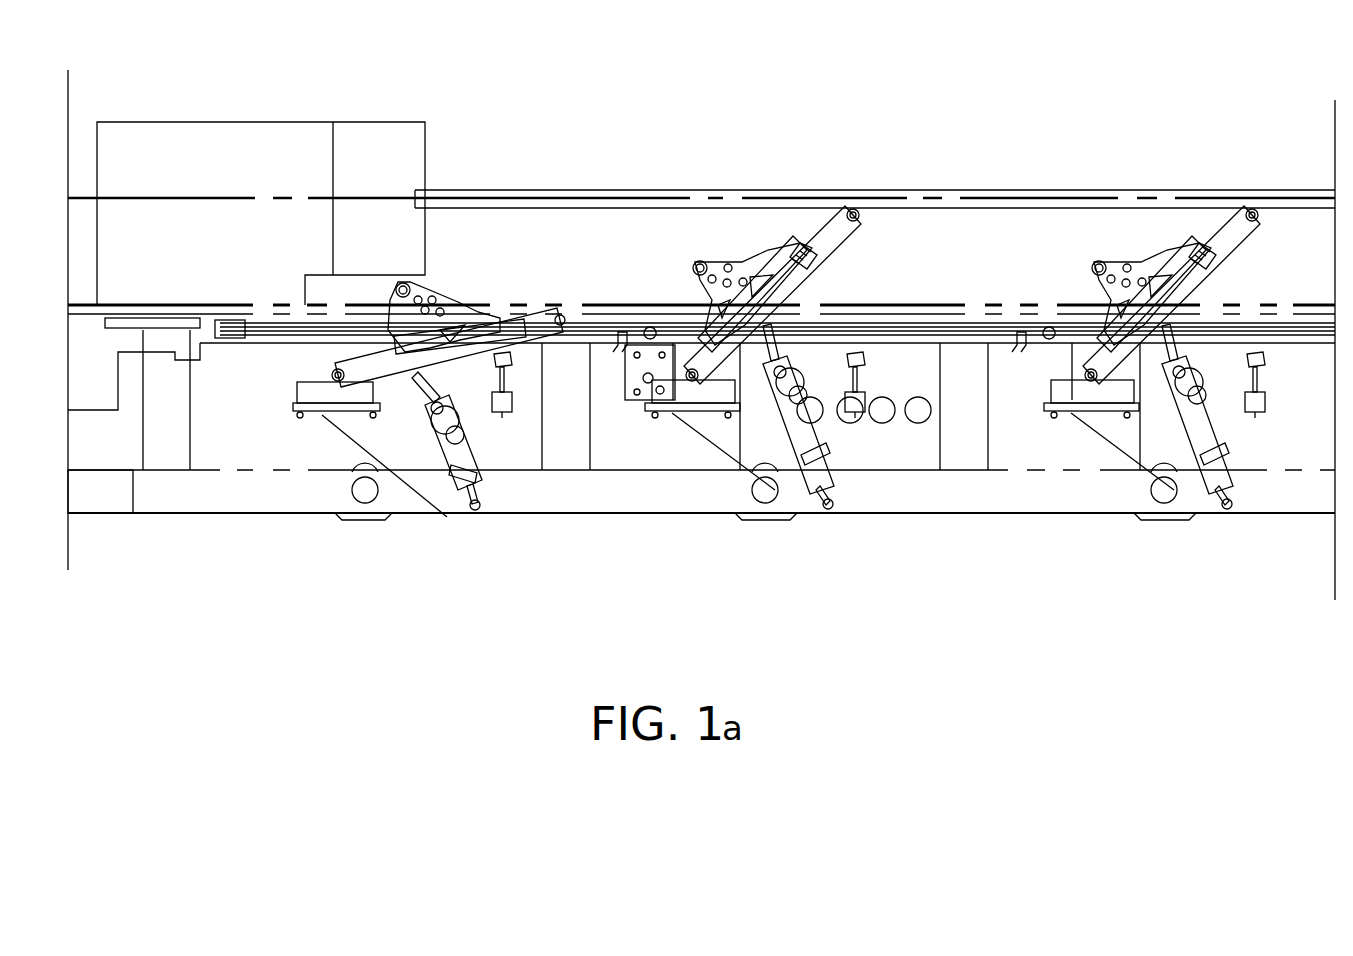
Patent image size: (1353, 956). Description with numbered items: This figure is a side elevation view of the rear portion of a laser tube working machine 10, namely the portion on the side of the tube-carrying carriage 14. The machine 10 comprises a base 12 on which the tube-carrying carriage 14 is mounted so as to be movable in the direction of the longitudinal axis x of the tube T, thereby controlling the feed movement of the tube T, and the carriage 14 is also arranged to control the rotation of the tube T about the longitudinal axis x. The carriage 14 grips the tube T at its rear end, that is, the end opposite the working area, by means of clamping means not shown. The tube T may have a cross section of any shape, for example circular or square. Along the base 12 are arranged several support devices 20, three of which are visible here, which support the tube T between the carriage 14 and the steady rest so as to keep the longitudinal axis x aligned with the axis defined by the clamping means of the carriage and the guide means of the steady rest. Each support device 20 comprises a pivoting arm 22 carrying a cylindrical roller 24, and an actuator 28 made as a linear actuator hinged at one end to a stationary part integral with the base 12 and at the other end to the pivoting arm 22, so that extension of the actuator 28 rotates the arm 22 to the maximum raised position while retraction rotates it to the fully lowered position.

The tube working machine 10 is at (844, 162).
The base 12 is at (660, 515).
The tube-carrying carriage 14 is at (262, 122).
The support device 20 is at (768, 246).
The pivoting arm 22 is at (817, 220).
The cylindrical roller 24 is at (877, 205).
The actuator 28 is at (469, 456).
The longitudinal axis x is at (572, 190).
The tube T is at (970, 190).